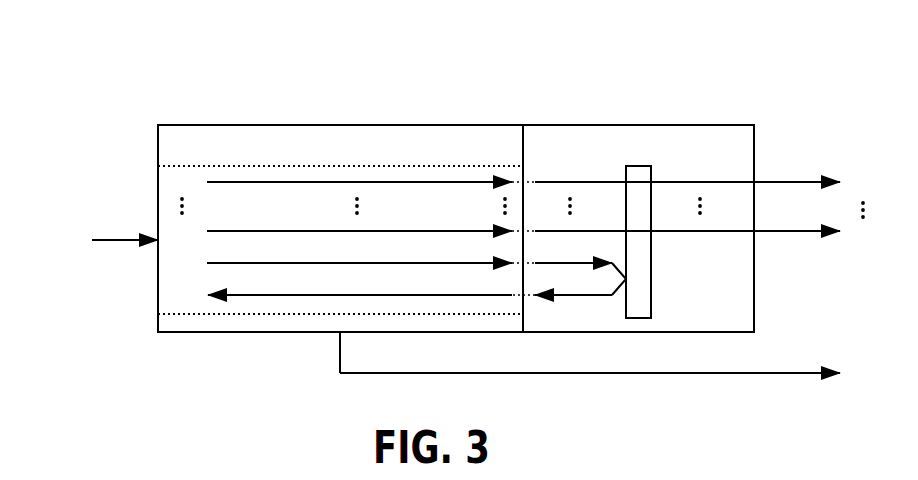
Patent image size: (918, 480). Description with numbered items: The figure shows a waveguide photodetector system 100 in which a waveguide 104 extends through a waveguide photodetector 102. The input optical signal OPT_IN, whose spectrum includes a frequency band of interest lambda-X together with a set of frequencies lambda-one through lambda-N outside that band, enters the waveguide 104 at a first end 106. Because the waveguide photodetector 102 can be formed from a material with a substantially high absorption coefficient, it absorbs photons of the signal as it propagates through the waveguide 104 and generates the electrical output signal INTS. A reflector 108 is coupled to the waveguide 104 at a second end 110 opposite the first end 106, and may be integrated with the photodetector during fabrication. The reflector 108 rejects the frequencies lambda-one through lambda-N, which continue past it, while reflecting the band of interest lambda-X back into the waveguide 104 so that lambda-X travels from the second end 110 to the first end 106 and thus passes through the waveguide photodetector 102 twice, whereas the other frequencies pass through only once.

The waveguide photodetector system 100 is at (104, 44).
The waveguide photodetector 102 is at (180, 125).
The waveguide 104 is at (178, 172).
The first end 106 is at (158, 332).
The reflector 108 is at (543, 125).
The second end 110 is at (523, 332).